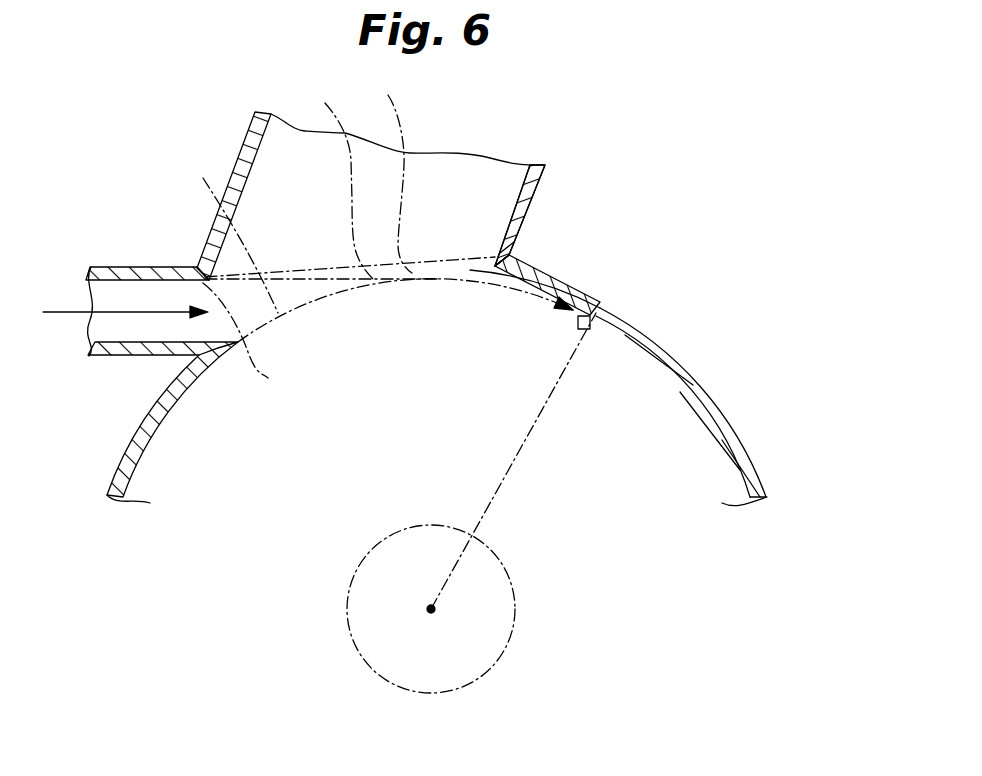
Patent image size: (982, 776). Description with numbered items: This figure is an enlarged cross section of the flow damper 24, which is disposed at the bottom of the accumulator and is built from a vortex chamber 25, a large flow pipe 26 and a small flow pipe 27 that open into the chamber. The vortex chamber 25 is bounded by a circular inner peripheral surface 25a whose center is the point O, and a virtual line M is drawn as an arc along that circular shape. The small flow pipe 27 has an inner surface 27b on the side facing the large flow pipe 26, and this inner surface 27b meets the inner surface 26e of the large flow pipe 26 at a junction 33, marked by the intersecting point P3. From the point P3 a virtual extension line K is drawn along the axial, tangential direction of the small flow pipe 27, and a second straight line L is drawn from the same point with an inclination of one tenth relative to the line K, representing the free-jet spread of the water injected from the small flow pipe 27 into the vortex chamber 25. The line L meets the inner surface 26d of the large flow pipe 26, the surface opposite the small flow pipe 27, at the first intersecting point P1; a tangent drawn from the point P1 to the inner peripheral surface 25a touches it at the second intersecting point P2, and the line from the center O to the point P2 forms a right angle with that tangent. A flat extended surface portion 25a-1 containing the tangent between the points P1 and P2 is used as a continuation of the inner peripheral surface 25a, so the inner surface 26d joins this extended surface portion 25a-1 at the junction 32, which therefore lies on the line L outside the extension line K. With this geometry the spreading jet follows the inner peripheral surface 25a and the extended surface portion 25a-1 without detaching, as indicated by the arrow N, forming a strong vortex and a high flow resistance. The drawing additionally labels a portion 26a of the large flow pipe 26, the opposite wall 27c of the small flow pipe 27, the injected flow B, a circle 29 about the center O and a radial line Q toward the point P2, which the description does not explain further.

The flow damper 24 is at (563, 135).
The vortex chamber 25 is at (466, 370).
The inner peripheral surface 25a is at (656, 371).
The extended surface portion 25a-1 is at (537, 283).
The large flow pipe 26 is at (449, 184).
The guide wall portion 26a is at (408, 190).
The inner surface of large flow pipe 26d is at (520, 197).
The inner surface of large flow pipe 26e is at (260, 168).
The small flow pipe 27 is at (138, 299).
The inner surface of small flow pipe 27b is at (142, 280).
The lower wall of branch pipe 27c is at (140, 342).
The center circle 29 is at (504, 642).
The junction 32 is at (493, 257).
The junction 33 is at (205, 280).
The gas flow B is at (65, 311).
The extension line K is at (340, 180).
The virtual line L is at (393, 171).
The virtual line M is at (228, 238).
The arrow N is at (588, 287).
The center of vortex chamber O is at (430, 624).
The first intersecting point P1 is at (515, 256).
The second intersecting point P2 is at (593, 328).
The third intersecting point P3 is at (251, 340).
The radius line Q is at (523, 447).